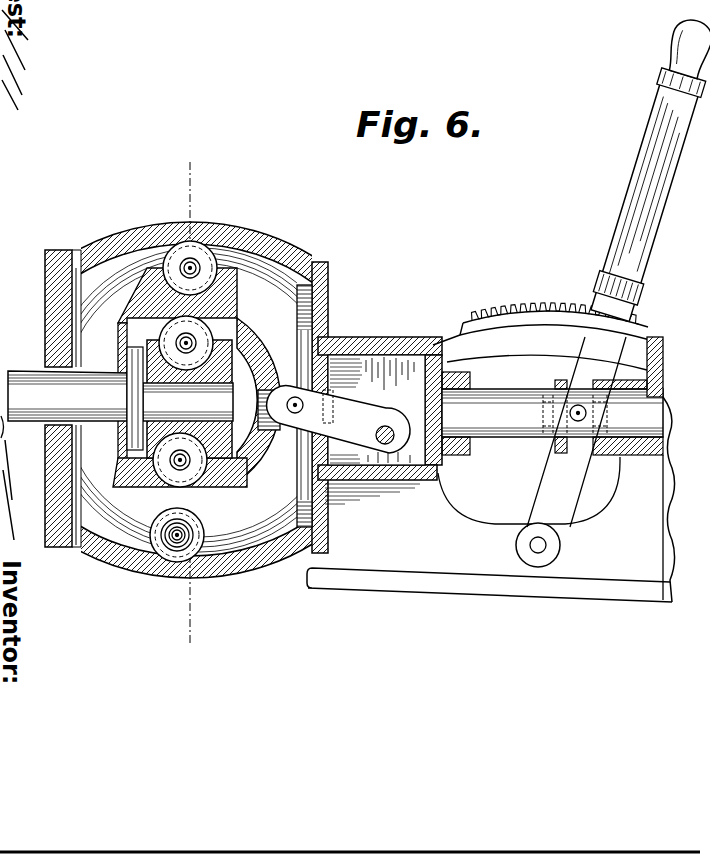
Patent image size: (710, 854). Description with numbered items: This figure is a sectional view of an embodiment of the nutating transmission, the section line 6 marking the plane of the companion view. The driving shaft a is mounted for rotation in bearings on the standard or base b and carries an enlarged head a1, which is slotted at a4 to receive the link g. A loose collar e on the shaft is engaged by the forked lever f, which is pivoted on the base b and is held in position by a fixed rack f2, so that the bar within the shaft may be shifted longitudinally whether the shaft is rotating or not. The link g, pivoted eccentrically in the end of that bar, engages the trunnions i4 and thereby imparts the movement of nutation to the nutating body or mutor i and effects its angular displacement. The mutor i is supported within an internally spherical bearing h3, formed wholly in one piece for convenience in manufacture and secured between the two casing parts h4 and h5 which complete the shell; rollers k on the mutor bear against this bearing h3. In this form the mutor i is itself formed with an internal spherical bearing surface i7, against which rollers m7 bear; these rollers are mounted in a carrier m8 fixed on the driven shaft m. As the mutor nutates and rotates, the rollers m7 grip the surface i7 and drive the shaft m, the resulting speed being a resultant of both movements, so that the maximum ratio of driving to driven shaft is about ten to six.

The section line 6- 6 is at (180, 629).
The internally spherical bearing h3 is at (259, 246).
The casing part h4 is at (329, 291).
The casing part h5 is at (48, 259).
The rollers k is at (145, 558).
The nutating body or mutor i is at (253, 338).
The trunnions i4 is at (293, 412).
The internal spherical bearing surface i7 is at (257, 451).
The driven shaft m is at (54, 383).
The rollers m7 is at (165, 458).
The carrier m8 is at (222, 389).
The link g is at (338, 419).
The slot a4 is at (394, 366).
The driving shaft a is at (510, 432).
The enlarged head a1 is at (552, 431).
The loose collar e is at (547, 447).
The forked lever f is at (621, 208).
The fixed rack f2 is at (520, 300).
The standard or base b is at (491, 499).